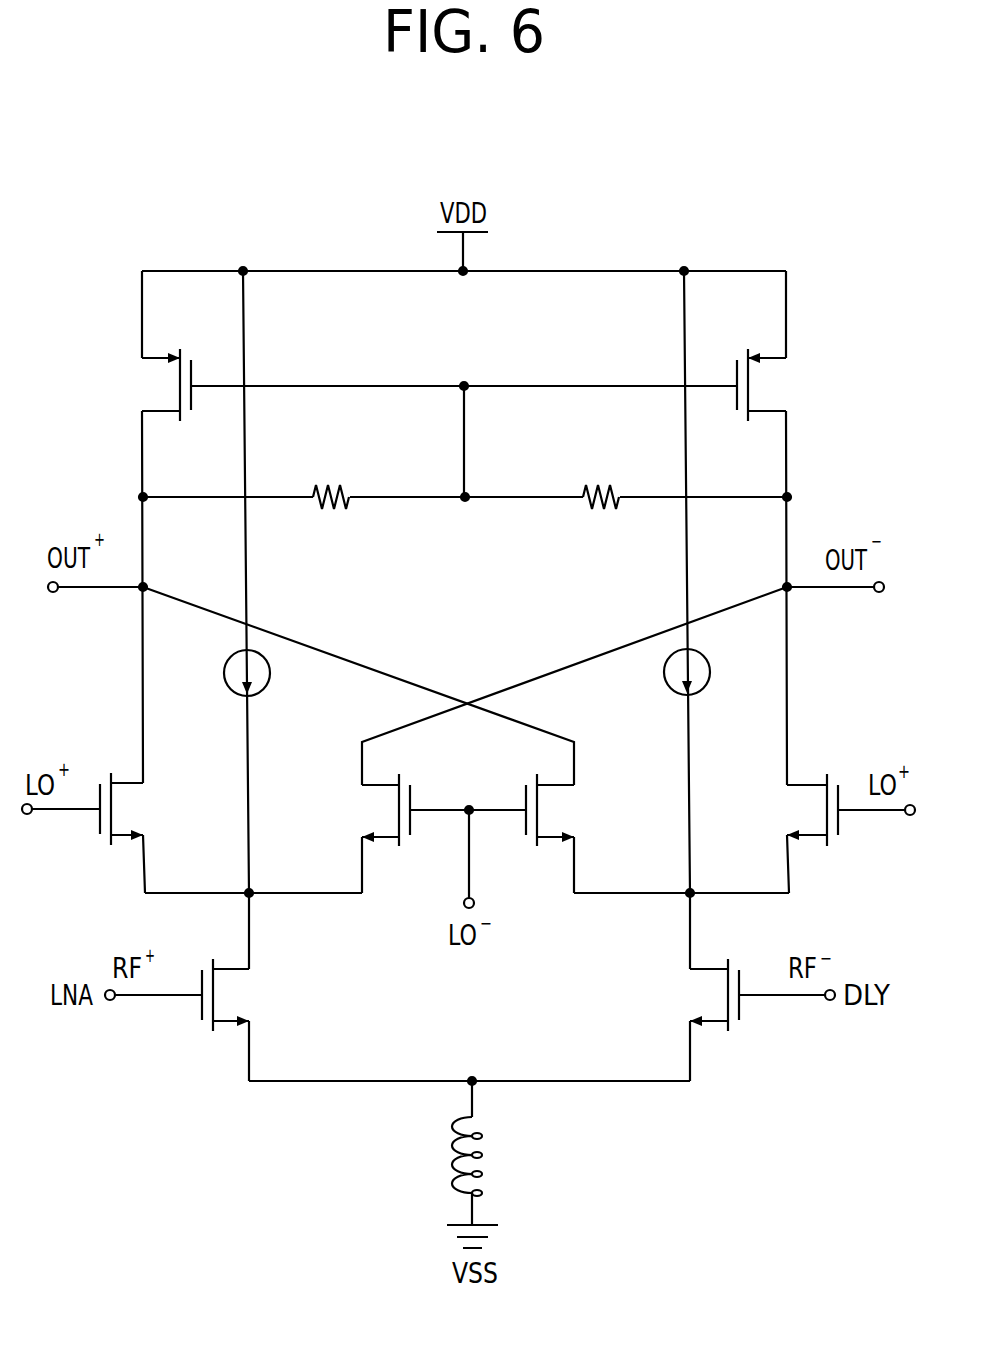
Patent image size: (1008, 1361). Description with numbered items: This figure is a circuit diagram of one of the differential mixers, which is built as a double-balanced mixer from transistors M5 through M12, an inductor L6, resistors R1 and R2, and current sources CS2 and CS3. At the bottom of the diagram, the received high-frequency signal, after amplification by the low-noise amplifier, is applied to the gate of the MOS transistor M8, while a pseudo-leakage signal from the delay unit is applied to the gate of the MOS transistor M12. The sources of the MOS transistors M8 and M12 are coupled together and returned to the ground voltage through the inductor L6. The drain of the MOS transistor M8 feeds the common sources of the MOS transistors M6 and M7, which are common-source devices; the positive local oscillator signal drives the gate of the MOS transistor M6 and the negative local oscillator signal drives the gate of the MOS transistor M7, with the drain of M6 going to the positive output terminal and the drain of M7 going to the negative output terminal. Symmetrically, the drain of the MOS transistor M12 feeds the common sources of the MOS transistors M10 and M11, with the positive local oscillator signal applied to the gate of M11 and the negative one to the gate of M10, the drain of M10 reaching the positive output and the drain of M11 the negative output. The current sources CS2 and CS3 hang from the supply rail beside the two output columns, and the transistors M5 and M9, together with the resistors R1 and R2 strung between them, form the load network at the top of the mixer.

The MOS transistor M5 is at (154, 385).
The MOS transistor M9 is at (778, 385).
The resistor R1 is at (331, 479).
The resistor R2 is at (601, 479).
The current source CS2 is at (272, 673).
The current source CS3 is at (713, 672).
The MOS transistor M6 is at (136, 809).
The MOS transistor M7 is at (373, 833).
The MOS transistor M10 is at (572, 833).
The MOS transistor M11 is at (795, 810).
The MOS transistor M8 is at (243, 995).
The MOS transistor M12 is at (695, 995).
The inductor L6 is at (450, 1156).